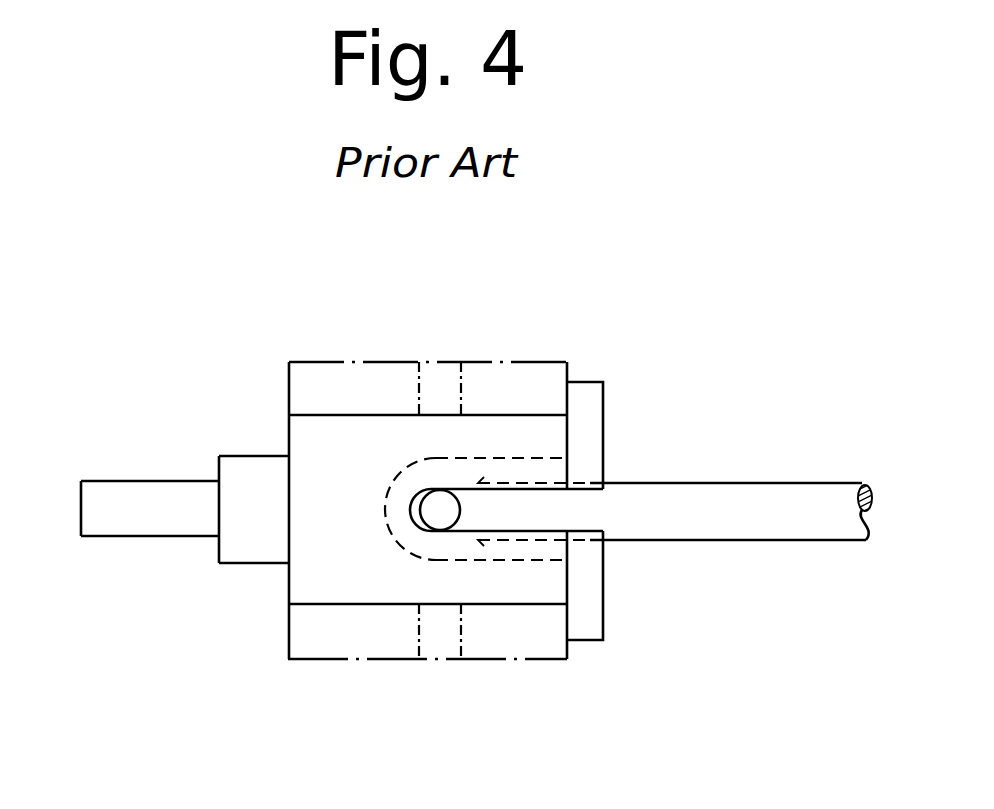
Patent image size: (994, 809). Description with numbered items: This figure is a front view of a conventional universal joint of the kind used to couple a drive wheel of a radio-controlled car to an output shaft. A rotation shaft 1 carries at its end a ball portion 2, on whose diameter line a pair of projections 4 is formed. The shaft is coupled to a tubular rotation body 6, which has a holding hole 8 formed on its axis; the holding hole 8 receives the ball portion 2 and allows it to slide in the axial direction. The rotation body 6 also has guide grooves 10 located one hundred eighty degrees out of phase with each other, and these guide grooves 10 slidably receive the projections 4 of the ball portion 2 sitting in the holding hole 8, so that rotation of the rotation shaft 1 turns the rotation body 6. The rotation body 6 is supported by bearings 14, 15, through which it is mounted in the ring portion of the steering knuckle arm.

The rotation shaft 1 is at (781, 501).
The ball portion 2 is at (478, 549).
The projections 4 is at (440, 500).
The rotation body 6 is at (279, 582).
The holding hole 8 is at (528, 563).
The guide grooves 10 is at (525, 489).
The bearing 14 is at (547, 643).
The bearing 15 is at (305, 643).